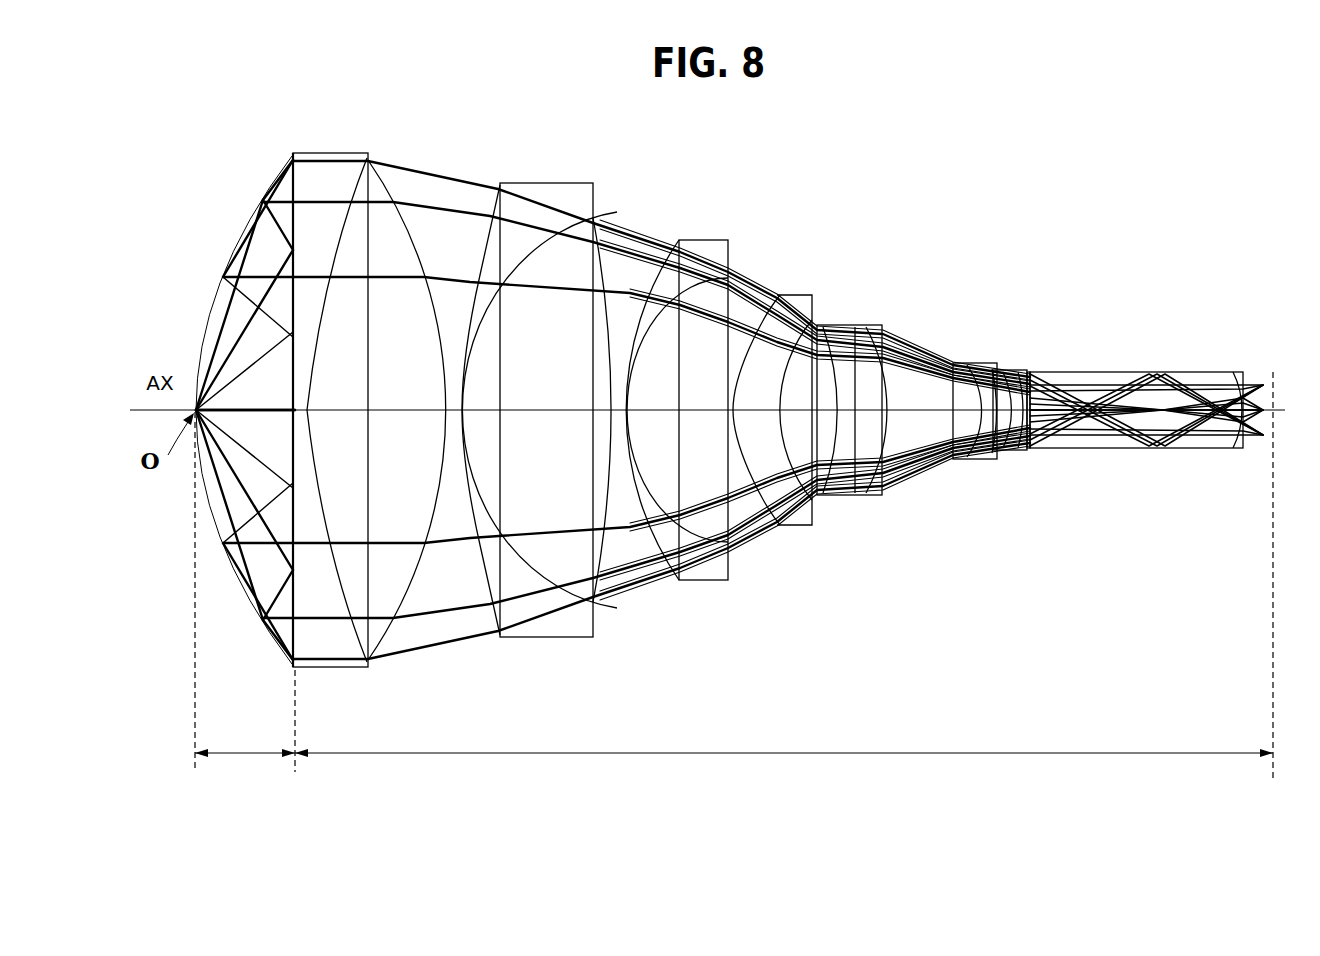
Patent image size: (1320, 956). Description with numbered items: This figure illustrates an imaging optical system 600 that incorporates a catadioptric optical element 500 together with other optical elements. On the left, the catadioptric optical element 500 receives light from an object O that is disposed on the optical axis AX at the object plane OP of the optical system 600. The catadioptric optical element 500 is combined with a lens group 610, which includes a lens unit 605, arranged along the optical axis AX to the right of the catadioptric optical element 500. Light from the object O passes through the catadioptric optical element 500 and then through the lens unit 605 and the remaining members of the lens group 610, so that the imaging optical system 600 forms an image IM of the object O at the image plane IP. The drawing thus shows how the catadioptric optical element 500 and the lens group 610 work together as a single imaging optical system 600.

The imaging optical system 600 is at (864, 170).
The lens unit 605 is at (416, 232).
The catadioptric optical element 500 is at (237, 608).
The lens group 610 is at (788, 588).